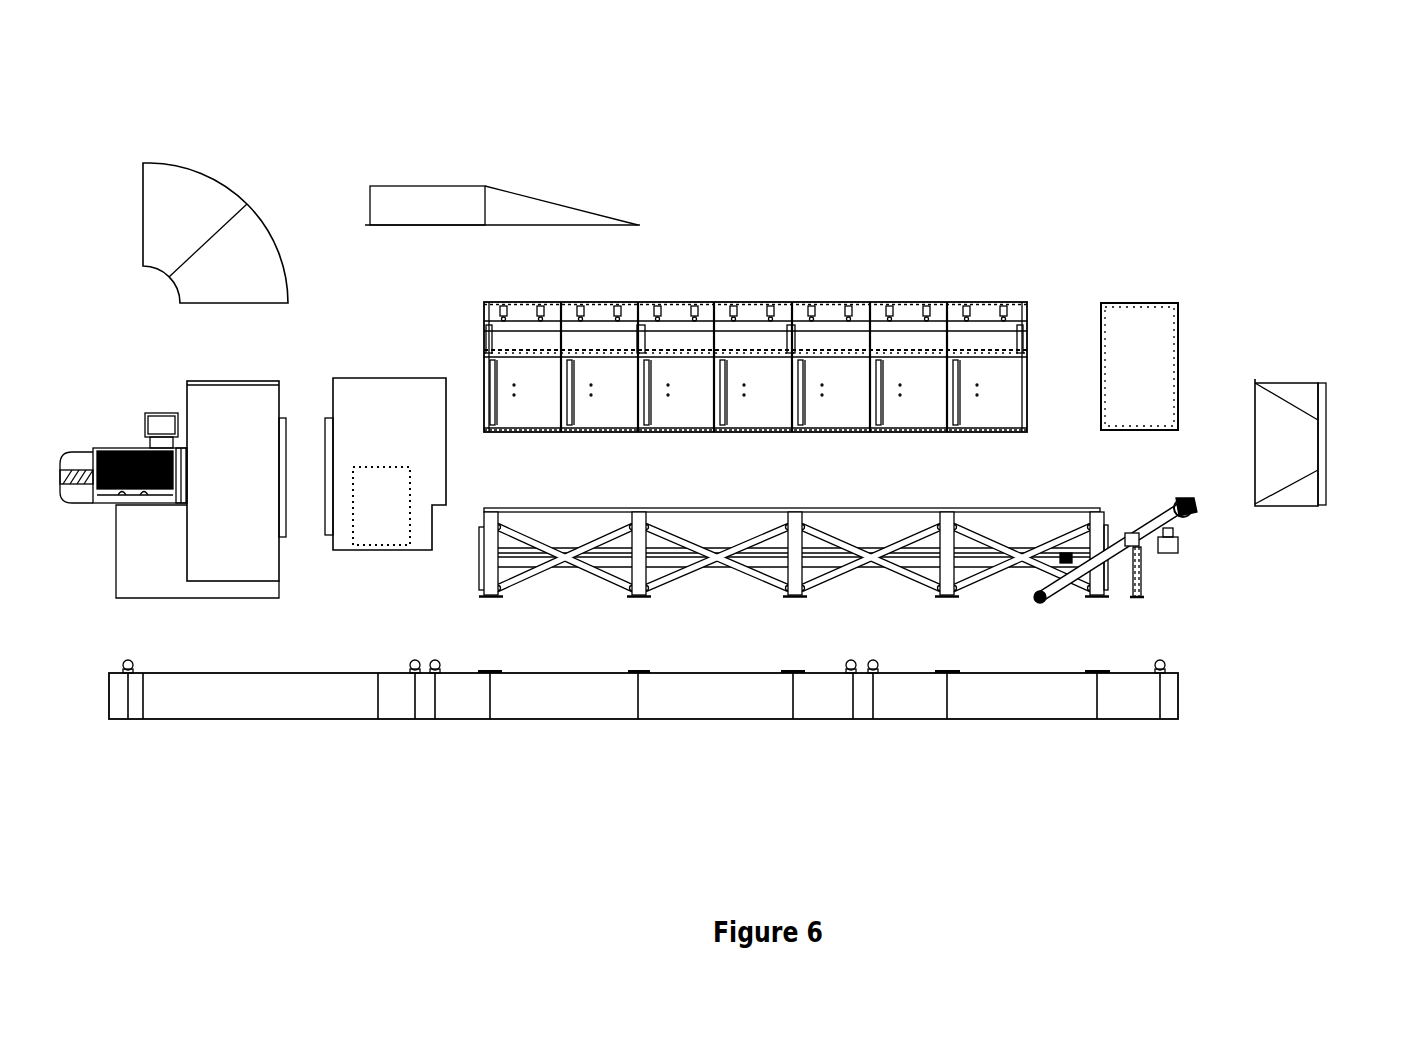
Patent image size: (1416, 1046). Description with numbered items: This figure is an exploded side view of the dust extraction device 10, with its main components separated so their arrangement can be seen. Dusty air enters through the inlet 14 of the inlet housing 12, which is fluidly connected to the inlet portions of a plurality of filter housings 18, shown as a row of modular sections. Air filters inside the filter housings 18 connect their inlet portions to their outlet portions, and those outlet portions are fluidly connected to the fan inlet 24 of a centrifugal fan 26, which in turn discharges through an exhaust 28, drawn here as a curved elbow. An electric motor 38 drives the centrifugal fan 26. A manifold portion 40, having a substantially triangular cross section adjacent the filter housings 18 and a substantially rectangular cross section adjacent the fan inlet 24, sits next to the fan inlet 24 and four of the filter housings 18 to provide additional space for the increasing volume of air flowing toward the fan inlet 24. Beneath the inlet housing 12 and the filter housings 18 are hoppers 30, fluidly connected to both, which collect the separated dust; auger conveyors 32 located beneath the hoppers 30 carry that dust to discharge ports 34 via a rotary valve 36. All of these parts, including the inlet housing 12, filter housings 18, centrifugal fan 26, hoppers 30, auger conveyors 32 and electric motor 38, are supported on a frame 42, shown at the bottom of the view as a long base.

The dust extraction device 10 is at (1142, 134).
The inlet housing 12 is at (1265, 346).
The inlet 14 is at (1331, 364).
The filter housings 18 is at (680, 360).
The fan inlet 24 is at (424, 490).
The centrifugal fan 26 is at (232, 548).
The exhaust 28 is at (202, 195).
The hoppers 30 is at (566, 522).
The auger conveyors 32 is at (672, 560).
The discharge ports 34 is at (1168, 545).
The rotary valve 36 is at (1192, 515).
The electric motor 38 is at (80, 455).
The manifold portion 40 is at (504, 156).
The frame 42 is at (1040, 710).